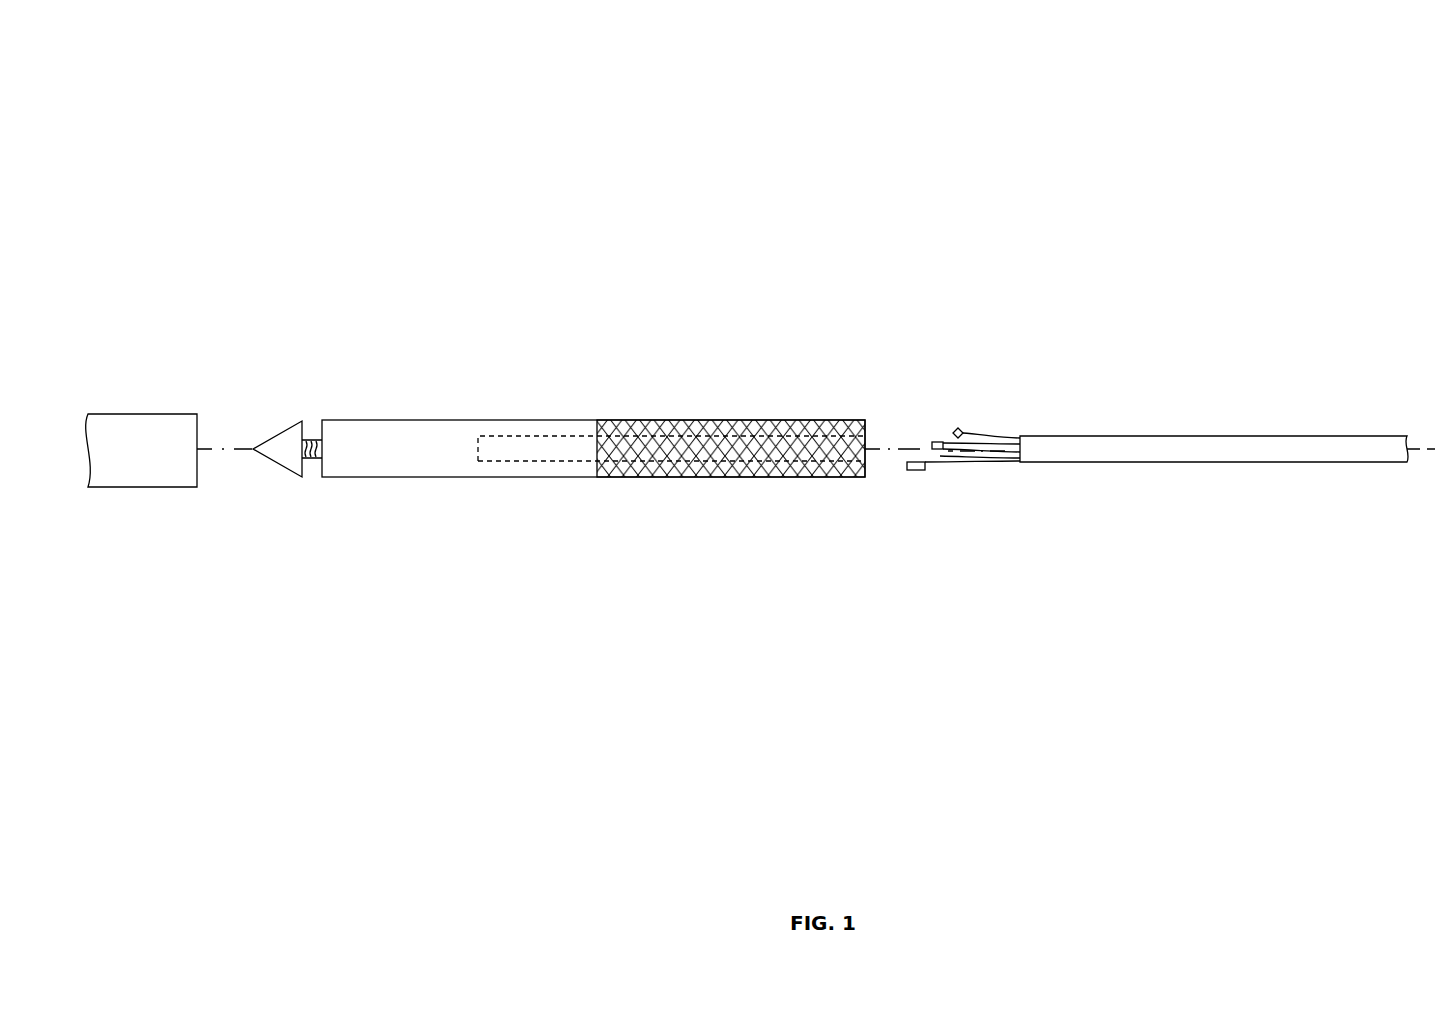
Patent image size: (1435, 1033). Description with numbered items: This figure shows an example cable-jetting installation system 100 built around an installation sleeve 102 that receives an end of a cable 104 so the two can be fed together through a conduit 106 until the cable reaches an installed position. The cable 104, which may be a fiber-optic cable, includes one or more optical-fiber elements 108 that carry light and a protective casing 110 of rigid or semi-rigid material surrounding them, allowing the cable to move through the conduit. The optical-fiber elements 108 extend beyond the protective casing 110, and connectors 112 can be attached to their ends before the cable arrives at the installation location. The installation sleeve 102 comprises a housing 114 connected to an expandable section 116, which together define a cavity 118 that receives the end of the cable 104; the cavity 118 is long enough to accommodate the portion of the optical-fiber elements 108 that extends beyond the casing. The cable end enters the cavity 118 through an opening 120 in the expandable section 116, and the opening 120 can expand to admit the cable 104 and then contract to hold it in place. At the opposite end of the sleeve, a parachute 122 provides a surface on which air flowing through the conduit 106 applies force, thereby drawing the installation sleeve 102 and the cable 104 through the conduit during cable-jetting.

The cable-jetting installation system 100 is at (255, 120).
The installation sleeve 102 is at (602, 346).
The cable 104 is at (1327, 371).
The conduit 106 is at (140, 487).
The optical-fiber elements 108 is at (973, 437).
The protective casing 110 is at (1258, 463).
The connectors 112 is at (925, 470).
The housing 114 is at (480, 477).
The expandable section 116 is at (735, 477).
The cavity 118 is at (478, 436).
The opening 120 is at (866, 441).
The parachute 122 is at (278, 434).